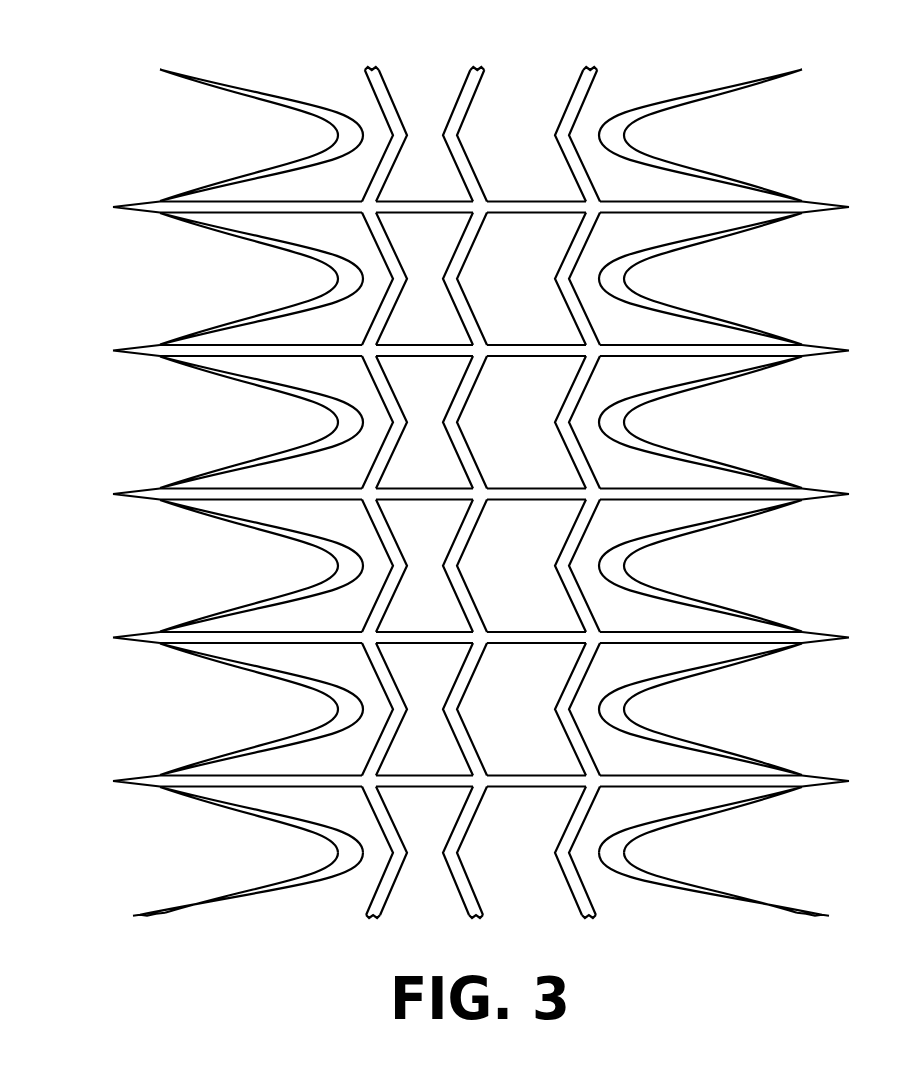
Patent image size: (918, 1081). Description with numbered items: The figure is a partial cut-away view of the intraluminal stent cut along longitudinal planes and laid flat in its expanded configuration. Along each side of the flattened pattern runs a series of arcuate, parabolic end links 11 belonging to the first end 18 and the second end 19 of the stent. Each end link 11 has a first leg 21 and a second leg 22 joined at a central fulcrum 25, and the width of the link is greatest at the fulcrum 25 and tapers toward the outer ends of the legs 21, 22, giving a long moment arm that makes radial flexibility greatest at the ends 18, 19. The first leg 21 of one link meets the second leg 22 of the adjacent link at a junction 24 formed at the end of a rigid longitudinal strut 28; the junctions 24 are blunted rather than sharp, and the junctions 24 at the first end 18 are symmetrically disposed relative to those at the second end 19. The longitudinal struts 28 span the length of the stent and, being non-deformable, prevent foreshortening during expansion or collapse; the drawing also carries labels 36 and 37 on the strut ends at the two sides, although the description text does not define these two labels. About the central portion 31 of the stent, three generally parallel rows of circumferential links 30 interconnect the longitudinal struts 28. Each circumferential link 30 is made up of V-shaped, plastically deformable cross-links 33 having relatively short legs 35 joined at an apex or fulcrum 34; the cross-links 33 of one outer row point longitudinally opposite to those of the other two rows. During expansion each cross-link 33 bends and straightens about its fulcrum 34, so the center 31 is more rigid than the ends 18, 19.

The end link 11 is at (244, 316).
The first end 18 is at (118, 103).
The second end 19 is at (790, 107).
The first end (first leg) of end link 21 is at (176, 344).
The second end (second leg) of end link 22 is at (165, 357).
The junction 24 is at (136, 204).
The central fulcrum 25 is at (338, 280).
The longitudinal strut 28 is at (534, 216).
The circumferential link 30 is at (456, 98).
The central portion 31 is at (522, 789).
The cross-link 33 is at (394, 389).
The apex (fulcrum) of cross-link 34 is at (446, 280).
The leg of cross-link 35 is at (467, 247).
The transverse strut 36 is at (215, 202).
The transverse strut 37 is at (767, 207).